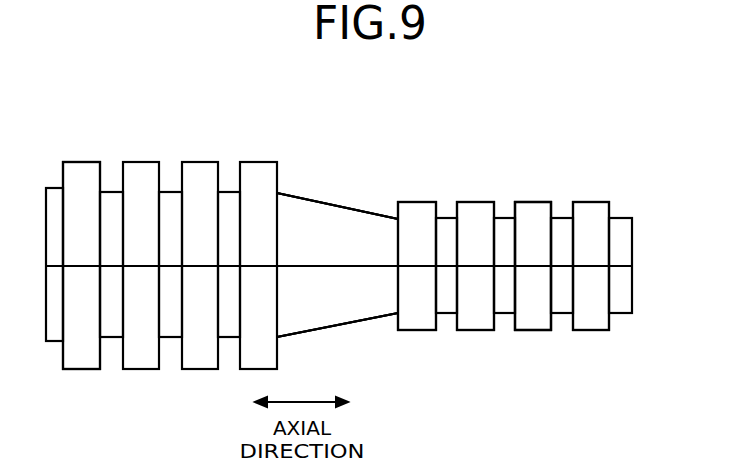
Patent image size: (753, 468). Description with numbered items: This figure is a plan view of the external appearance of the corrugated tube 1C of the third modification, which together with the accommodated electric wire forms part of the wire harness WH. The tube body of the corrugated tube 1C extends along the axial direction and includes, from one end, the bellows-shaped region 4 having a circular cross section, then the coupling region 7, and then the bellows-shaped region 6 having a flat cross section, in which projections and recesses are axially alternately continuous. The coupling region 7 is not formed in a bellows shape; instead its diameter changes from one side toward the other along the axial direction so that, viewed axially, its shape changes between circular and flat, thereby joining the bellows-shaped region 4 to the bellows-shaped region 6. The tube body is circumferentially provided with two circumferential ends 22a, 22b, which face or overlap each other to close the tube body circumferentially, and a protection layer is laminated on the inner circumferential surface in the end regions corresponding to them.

The corrugated tube 1C is at (229, 147).
The bellows-shaped region having the circular cross section 4 is at (172, 162).
The coupling region 7 is at (325, 197).
The wire harness WH is at (462, 133).
The bellows-shaped region having the flat cross section 6 is at (503, 202).
The circumferential end 22a is at (355, 267).
The circumferential end 22b is at (341, 280).